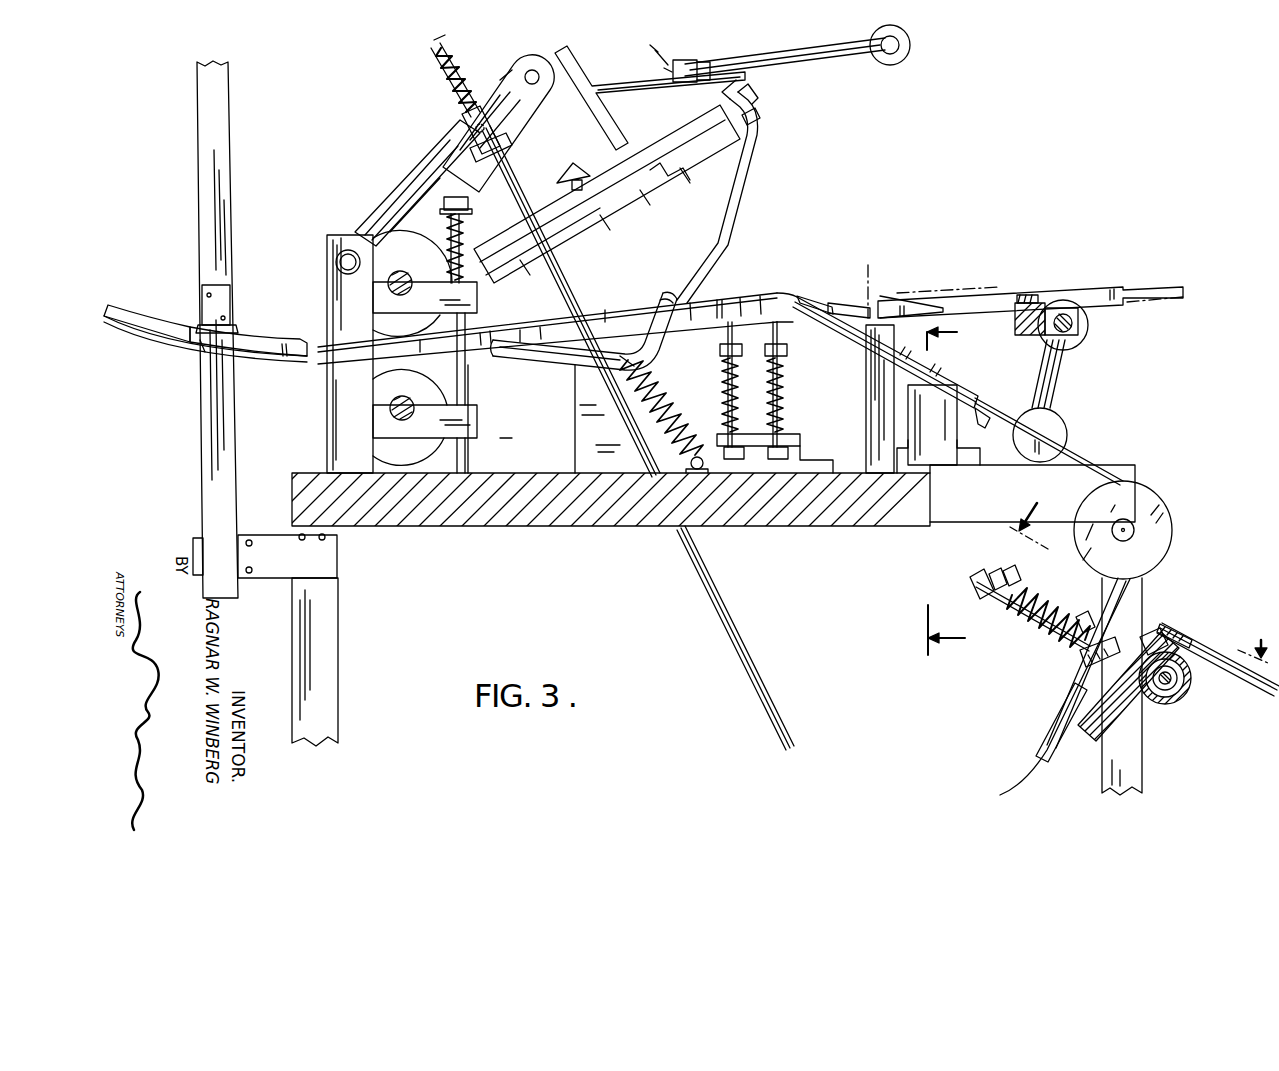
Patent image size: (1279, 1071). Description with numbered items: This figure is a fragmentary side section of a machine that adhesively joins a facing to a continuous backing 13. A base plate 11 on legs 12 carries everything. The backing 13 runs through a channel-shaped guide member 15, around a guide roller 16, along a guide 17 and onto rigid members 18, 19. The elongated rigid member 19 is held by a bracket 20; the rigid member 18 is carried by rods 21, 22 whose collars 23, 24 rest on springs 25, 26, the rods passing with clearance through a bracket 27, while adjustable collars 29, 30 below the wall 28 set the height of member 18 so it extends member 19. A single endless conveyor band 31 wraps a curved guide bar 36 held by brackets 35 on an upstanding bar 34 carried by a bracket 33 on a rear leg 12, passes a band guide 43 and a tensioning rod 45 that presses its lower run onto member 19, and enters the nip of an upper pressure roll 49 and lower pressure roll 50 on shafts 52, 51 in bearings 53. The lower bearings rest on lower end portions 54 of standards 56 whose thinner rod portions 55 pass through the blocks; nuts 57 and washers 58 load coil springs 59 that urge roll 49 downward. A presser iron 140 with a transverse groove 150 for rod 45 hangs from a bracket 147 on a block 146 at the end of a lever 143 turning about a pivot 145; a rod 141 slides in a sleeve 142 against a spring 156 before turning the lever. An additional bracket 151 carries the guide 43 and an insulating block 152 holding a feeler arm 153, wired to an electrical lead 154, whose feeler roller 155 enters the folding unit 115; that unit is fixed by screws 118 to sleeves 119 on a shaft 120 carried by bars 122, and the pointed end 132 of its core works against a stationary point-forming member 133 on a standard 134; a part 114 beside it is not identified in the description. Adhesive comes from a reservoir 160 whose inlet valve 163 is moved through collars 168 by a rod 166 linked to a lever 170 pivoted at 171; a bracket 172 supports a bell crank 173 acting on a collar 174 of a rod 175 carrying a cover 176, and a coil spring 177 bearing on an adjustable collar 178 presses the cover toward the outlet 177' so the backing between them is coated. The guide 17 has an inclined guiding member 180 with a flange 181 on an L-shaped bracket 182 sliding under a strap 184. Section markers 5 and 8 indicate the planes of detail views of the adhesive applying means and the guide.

The section line 5- 5 is at (1139, 579).
The section line 8- 8 is at (946, 496).
The base plate 11 is at (535, 530).
The legs 12 is at (332, 647).
The continuous backing 13 is at (130, 345).
The channel-shaped guide member 15 is at (1040, 744).
The guide roller 16 is at (1172, 528).
The guide 17 is at (968, 378).
The rigid member 18 is at (748, 296).
The elongated rigid member 19 is at (620, 318).
The bracket 20 is at (570, 418).
The rod 21 is at (728, 342).
The rod 22 is at (780, 342).
The collar 23 is at (722, 358).
The collar 24 is at (787, 356).
The spring 25 is at (722, 390).
The spring 26 is at (784, 392).
The bracket 27 is at (800, 444).
The wall of bracket 28 is at (790, 434).
The collar 29 is at (726, 460).
The collar 30 is at (770, 460).
The endless conveyor band 31 is at (110, 305).
The bracket 33 is at (273, 578).
The upstanding bar 34 is at (200, 185).
The brackets 35 is at (200, 302).
The curved guide bar 36 is at (265, 343).
The band guide 43 is at (765, 100).
The tensioning rod 45 is at (652, 300).
The upper pressure roll 49 is at (395, 330).
The lower pressure roll 50 is at (385, 452).
The lower shaft 51 is at (390, 409).
The upper shaft 52 is at (390, 288).
The bearings 53 is at (478, 300).
The lower end portions of standards 54 is at (470, 455).
The rod portions of standards 55 is at (468, 388).
The standards 56 is at (503, 404).
The nuts 57 is at (458, 200).
The washers 58 is at (470, 212).
The coil springs 59 is at (466, 240).
The block 114 is at (1015, 325).
The folding unit 115 is at (1100, 290).
The screws 118 is at (1030, 295).
The sleeves 119 is at (1078, 313).
The shaft 120 is at (1080, 330).
The bars 122 is at (1066, 365).
The pointed end of core 132 is at (1020, 286).
The stationary point-forming member 133 is at (812, 296).
The standard 134 is at (866, 403).
The presser iron 140 is at (622, 198).
The rod 141 is at (740, 645).
The sleeve 142 is at (462, 125).
The lever 143 is at (408, 180).
The pivot 145 is at (340, 263).
The block 146 is at (548, 105).
The bracket 147 is at (603, 118).
The transverse groove 150 is at (685, 178).
The additional bracket 151 is at (612, 90).
The insulating block 152 is at (688, 60).
The feeler arm 153 is at (828, 58).
The electrical lead 154 is at (655, 50).
The feeler roller 155 is at (912, 50).
The spring 156 is at (434, 52).
The adhesive reservoir 160 is at (1182, 704).
The valve 163 is at (1152, 706).
The rod 166 is at (1192, 628).
The collars 168 is at (1180, 684).
The manually turnable lever 170 is at (1262, 688).
The lever pivot 171 is at (1228, 650).
The bracket 172 is at (1000, 600).
The bell crank 173 is at (1010, 570).
The collar 174 is at (992, 572).
The rod 175 is at (968, 576).
The cover 176 is at (1082, 658).
The coil spring 177 is at (1041, 611).
The outlet 177' is at (1166, 621).
The collar 178 is at (1086, 612).
The guiding member 180 is at (988, 416).
The flange 181 is at (965, 393).
The L-shaped bracket 182 is at (945, 445).
The strap 184 is at (960, 440).